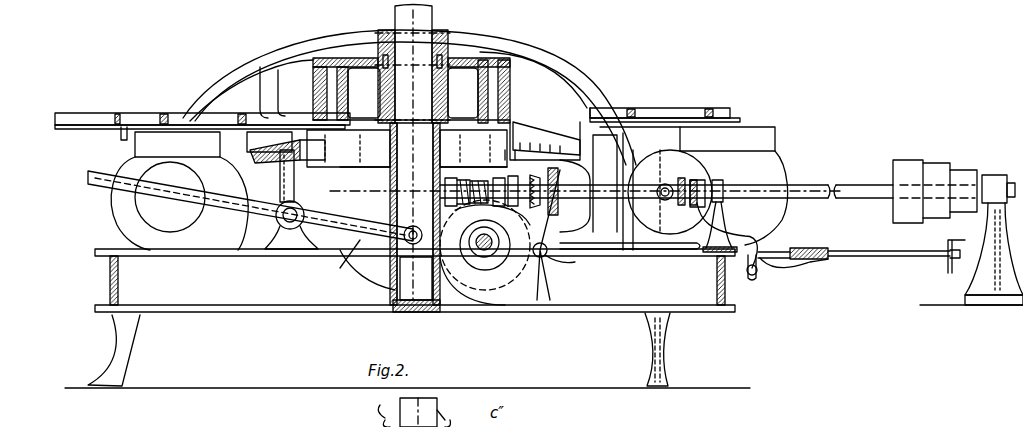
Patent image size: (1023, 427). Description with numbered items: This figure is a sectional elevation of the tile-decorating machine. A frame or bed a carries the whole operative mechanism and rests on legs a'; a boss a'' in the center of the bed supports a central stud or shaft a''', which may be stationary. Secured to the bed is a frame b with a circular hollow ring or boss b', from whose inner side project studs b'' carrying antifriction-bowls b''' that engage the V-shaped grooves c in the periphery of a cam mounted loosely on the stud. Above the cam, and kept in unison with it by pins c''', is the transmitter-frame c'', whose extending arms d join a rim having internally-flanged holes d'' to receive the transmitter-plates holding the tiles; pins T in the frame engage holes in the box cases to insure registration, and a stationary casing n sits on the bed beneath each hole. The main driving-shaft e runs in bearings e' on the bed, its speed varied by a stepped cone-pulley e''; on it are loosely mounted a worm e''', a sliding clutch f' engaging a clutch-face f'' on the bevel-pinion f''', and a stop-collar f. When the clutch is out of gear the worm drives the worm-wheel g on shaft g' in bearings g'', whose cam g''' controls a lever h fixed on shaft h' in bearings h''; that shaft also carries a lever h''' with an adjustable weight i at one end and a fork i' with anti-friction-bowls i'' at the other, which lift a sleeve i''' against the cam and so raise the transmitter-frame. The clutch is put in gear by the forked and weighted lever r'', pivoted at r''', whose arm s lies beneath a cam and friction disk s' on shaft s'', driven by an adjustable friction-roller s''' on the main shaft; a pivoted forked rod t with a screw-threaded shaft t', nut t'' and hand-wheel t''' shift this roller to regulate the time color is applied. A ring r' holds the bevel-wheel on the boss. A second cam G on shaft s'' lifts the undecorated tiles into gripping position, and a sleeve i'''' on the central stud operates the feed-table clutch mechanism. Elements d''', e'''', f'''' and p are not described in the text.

The frame or bed a is at (415, 280).
The legs a' is at (393, 349).
The boss a'' is at (367, 270).
The central stud or shaft a''' is at (423, 216).
The frame b is at (619, 159).
The circular hollow ring or boss b' is at (535, 122).
The studs b'' is at (301, 176).
The antifriction-bowls b''' is at (411, 93).
The V-shaped grooves c is at (388, 78).
The transmitter-frame c'' is at (418, 93).
The pins c''' is at (411, 219).
The extending arms d is at (397, 106).
The internally-flanged holes d'' is at (421, 103).
The plate end d''' is at (649, 96).
The pins T is at (121, 134).
The stationary casing n is at (450, 188).
The adjustable weight i is at (170, 197).
The fork i' is at (423, 193).
The anti-friction-bowls i'' is at (416, 278).
The sleeve i''' is at (361, 148).
The sleeve i'''' is at (473, 143).
The lever h is at (409, 288).
The shaft h' is at (361, 215).
The bearings h'' is at (286, 214).
The lever h''' is at (245, 206).
The ring r' is at (275, 158).
The forked and weighted lever r'' is at (293, 157).
The pivot r''' is at (510, 155).
The main driving-shaft e is at (611, 181).
The bearings e' is at (547, 146).
The stepped cone-pulley e'' is at (935, 179).
The worm e''' is at (994, 240).
The spring coupling e'''' is at (469, 175).
The stop-collar f is at (499, 187).
The clutch f' is at (519, 180).
The clutch-face f'' is at (560, 192).
The bevel-pinion f''' is at (557, 235).
The lever link f'''' is at (567, 277).
The worm-wheel g is at (487, 245).
The shaft g' is at (478, 281).
The bearings g'' is at (477, 263).
The cam g''' is at (494, 214).
The wedge p is at (537, 153).
The arm s is at (658, 241).
The cam and friction disk s' is at (670, 192).
The shaft s'' is at (673, 204).
The adjustable friction-roller s''' is at (712, 171).
The second cam G is at (667, 183).
The pivoted forked rod t is at (731, 241).
The screw-threaded shaft t' is at (889, 239).
The nut t'' is at (794, 242).
The hand-wheel t''' is at (950, 268).